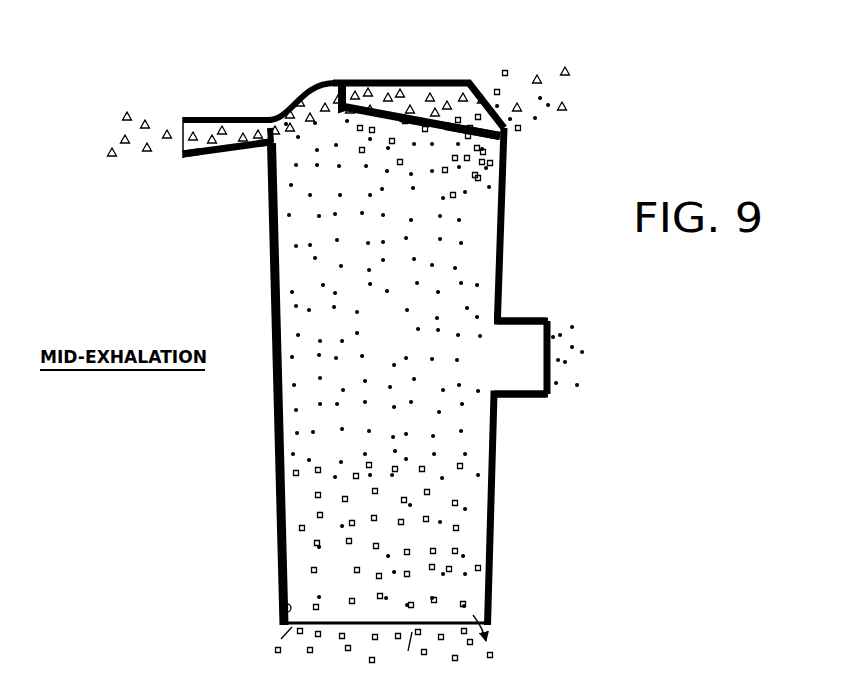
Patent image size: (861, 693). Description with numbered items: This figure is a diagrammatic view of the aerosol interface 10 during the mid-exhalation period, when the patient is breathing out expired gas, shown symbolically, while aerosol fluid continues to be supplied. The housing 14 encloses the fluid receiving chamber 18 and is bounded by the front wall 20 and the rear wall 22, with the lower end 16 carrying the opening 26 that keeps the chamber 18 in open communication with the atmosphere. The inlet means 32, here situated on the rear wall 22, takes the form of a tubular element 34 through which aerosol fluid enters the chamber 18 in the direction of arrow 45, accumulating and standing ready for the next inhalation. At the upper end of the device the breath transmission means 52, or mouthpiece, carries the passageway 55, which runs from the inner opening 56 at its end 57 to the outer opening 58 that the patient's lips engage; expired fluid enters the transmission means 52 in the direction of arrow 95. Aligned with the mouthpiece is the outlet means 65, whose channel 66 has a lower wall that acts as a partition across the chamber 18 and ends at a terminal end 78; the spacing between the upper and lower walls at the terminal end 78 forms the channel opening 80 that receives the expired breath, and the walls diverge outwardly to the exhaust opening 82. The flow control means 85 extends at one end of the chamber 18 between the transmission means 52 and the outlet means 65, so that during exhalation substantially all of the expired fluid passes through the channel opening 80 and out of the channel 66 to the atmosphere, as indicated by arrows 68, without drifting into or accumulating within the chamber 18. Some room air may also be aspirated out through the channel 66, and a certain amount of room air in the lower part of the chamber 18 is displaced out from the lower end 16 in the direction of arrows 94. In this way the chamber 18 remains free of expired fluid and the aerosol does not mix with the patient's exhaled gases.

The aerosol interface 10 is at (389, 354).
The housing 14 is at (270, 511).
The lower end 16 is at (452, 627).
The fluid receiving chamber 18 is at (384, 326).
The front wall 20 is at (272, 427).
The rear wall 22 is at (495, 510).
The opening 26 is at (283, 609).
The inlet means 32 is at (527, 401).
The tubular element 34 is at (533, 317).
The arrow 45 is at (585, 360).
The breath transmission means 52 is at (222, 117).
The passageway 55 is at (235, 141).
The inner opening 56 is at (267, 127).
The end 57 is at (268, 152).
The outer opening 58 is at (186, 154).
The outlet means 65 is at (412, 92).
The channel 66 is at (457, 92).
The arrows 68 is at (555, 58).
The terminal end 78 is at (344, 100).
The channel opening 80 is at (351, 95).
The exhaust opening 82 is at (497, 115).
The flow control means 85 is at (308, 79).
The arrows 94 is at (324, 657).
The arrow 95 is at (112, 135).